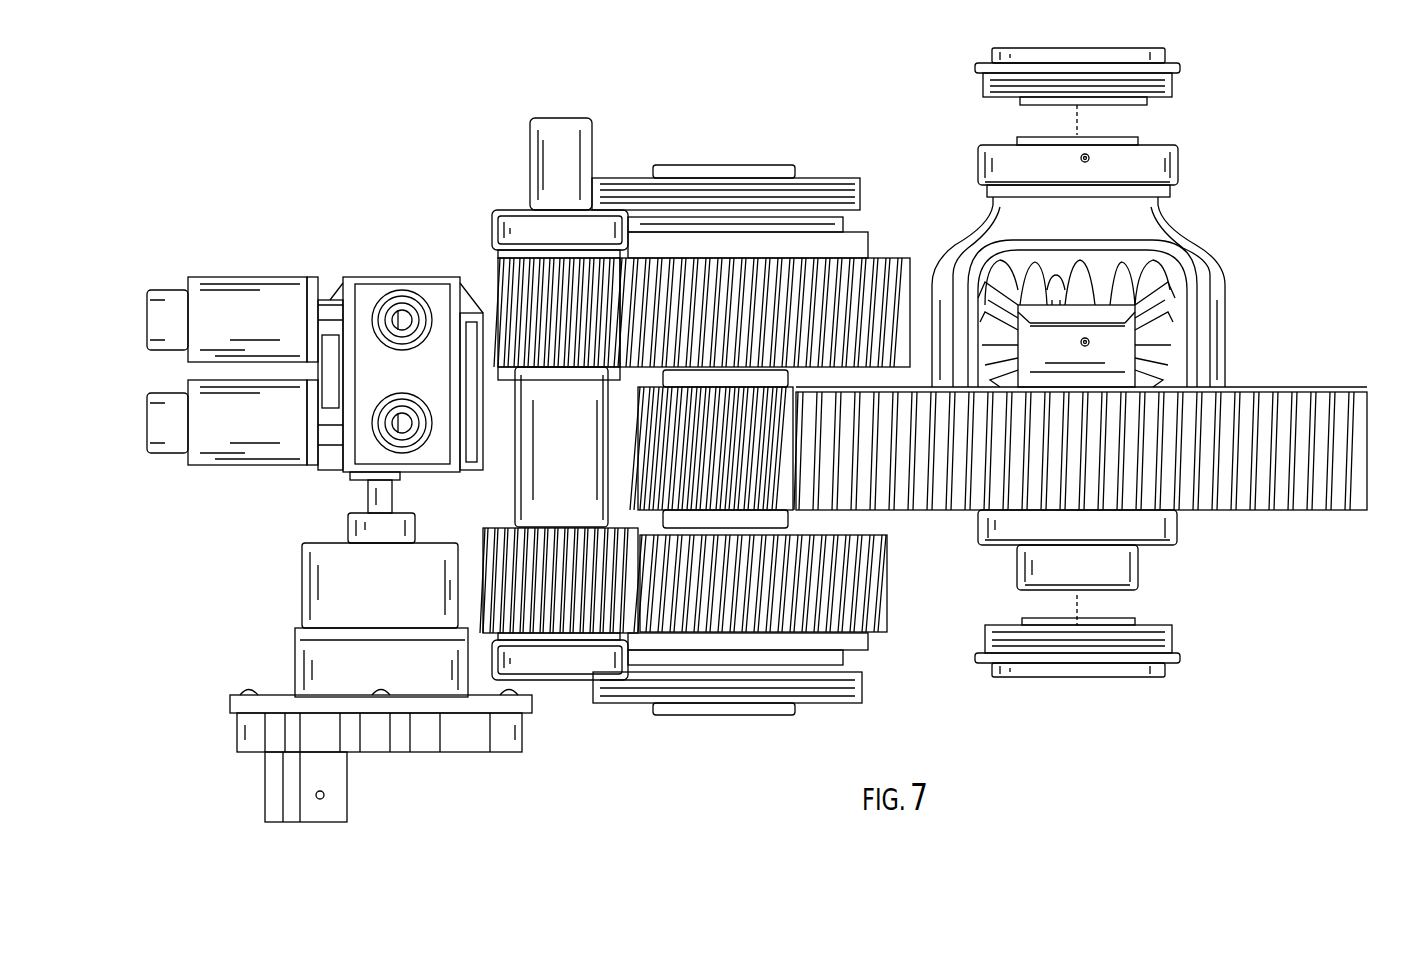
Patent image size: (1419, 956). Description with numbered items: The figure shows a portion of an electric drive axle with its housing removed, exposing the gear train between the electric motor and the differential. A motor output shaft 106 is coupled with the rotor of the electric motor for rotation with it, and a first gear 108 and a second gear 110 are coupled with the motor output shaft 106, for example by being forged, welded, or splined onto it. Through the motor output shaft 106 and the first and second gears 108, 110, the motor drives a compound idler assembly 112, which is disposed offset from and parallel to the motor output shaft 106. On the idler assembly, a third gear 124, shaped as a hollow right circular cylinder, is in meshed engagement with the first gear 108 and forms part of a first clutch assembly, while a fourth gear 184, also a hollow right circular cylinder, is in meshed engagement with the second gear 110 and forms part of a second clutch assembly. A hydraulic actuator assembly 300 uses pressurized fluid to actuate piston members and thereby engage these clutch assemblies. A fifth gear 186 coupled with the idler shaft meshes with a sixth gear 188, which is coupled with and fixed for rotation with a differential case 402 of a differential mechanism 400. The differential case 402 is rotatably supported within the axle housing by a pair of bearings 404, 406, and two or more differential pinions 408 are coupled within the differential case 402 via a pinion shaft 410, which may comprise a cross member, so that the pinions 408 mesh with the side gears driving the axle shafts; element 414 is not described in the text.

The motor output shaft 106 is at (555, 172).
The first gear 108 is at (525, 300).
The second gear 110 is at (513, 587).
The compound idler assembly 112 is at (710, 118).
The third gear 124 is at (795, 287).
The fourth gear 184 is at (852, 608).
The fifth gear 186 is at (727, 487).
The sixth gear 188 is at (1250, 497).
The hydraulic actuator assembly 300 is at (192, 550).
The differential mechanism 400 is at (1305, 302).
The differential case 402 is at (1183, 370).
The bearing 404 is at (1008, 157).
The bearing 406 is at (1140, 527).
The differential pinion 408 is at (995, 300).
The pinion shaft 410 is at (1107, 345).
The pinion gear 414 is at (1093, 288).